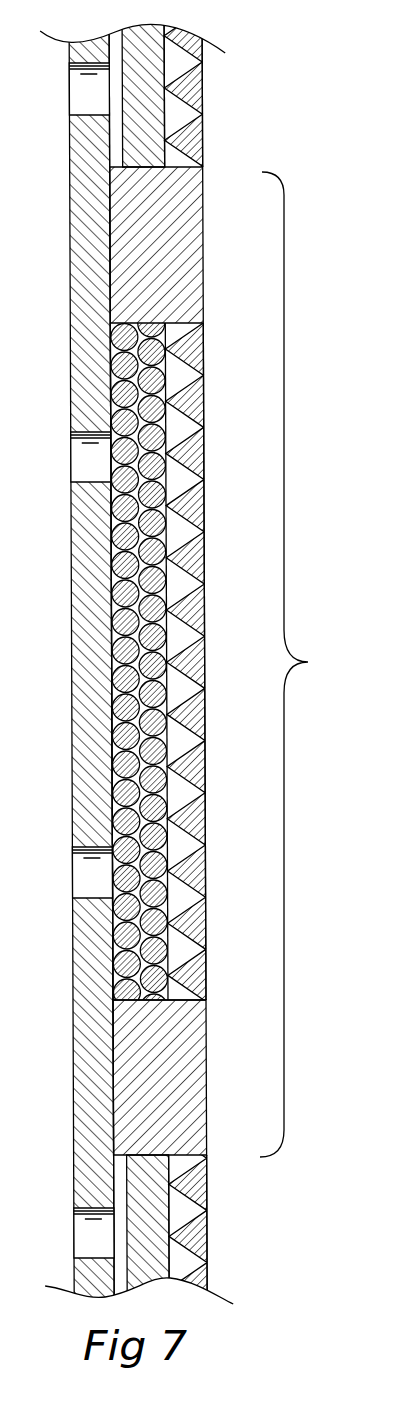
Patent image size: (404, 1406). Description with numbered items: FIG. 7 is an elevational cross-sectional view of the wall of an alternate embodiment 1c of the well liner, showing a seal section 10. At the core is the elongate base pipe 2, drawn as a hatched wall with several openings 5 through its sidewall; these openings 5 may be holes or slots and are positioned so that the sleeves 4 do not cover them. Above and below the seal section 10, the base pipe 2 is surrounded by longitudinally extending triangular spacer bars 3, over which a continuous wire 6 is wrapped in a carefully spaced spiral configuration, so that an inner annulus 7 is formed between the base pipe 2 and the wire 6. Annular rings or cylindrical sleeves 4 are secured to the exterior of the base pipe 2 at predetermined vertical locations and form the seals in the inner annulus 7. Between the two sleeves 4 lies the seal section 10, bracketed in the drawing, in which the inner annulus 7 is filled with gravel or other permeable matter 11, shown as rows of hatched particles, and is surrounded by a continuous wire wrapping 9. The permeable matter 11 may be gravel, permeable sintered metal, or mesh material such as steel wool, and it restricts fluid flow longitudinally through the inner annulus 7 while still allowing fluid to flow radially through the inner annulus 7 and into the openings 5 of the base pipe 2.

The embodiment 1c is at (204, 443).
The base pipe 2 is at (80, 370).
The spacer bars 3 is at (163, 21).
The cylindrical sleeves 4 is at (182, 210).
The openings 5 is at (92, 97).
The continuous wire 6 is at (188, 100).
The inner annulus 7 is at (153, 1002).
The continuous wire wrapping 9 is at (200, 870).
The seal section 10 is at (301, 664).
The permeable matter 11 is at (128, 559).